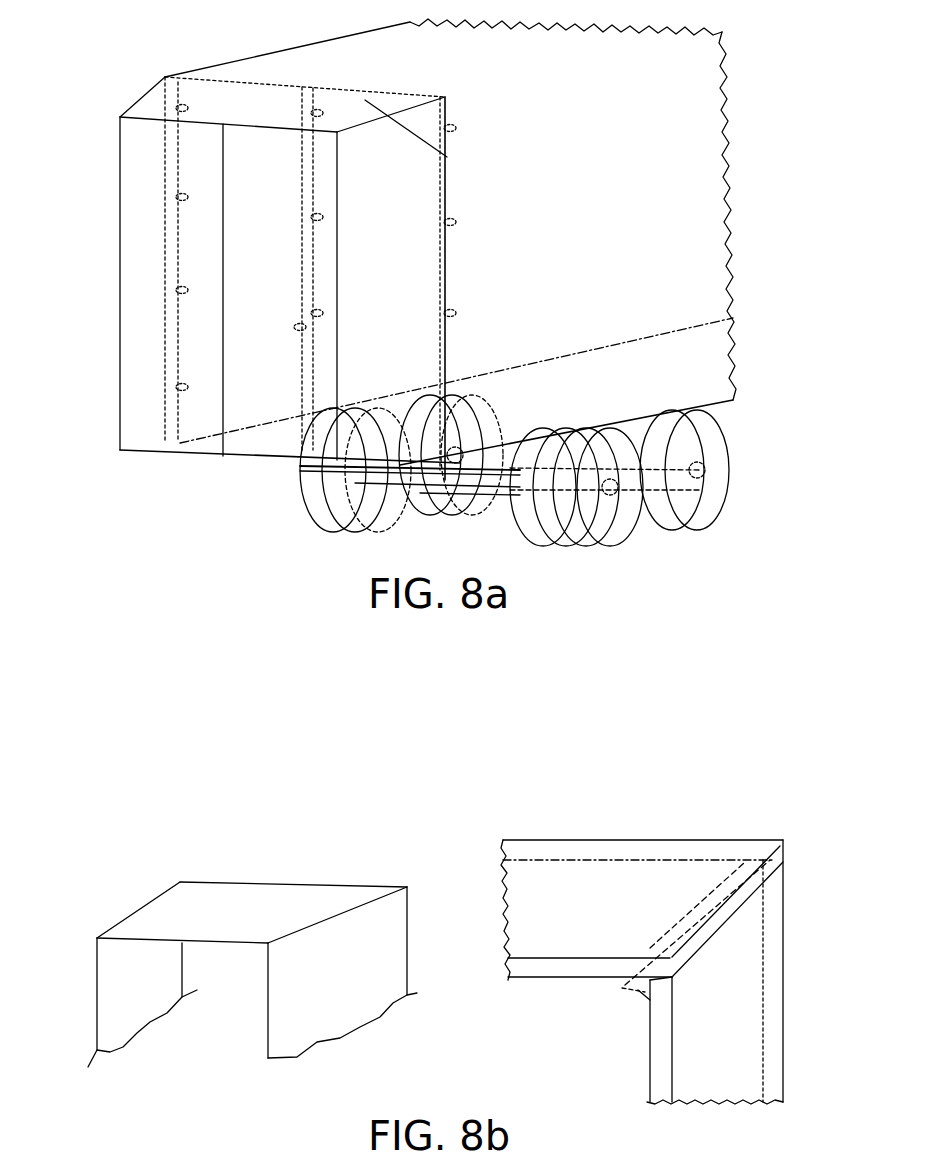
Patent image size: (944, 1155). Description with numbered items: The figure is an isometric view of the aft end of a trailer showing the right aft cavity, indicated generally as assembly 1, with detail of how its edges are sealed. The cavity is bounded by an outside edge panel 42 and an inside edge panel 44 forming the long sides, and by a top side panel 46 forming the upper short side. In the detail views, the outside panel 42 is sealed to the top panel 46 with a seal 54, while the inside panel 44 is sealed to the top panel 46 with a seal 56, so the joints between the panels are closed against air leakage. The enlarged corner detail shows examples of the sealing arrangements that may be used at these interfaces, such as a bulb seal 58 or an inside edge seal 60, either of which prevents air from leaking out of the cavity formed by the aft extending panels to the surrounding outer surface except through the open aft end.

In FIG. 8a, the trailer frame assembly 1 is at (278, 462).
In FIG. 8a, the outside edge panel 42 is at (427, 275).
In FIG. 8b, the outside edge panel 42 is at (342, 1012).
In FIG. 8a, the inside edge panel 44 is at (148, 92).
In FIG. 8b, the inside edge panel 44 is at (130, 1015).
In FIG. 8a, the top side panel 46 is at (367, 105).
In FIG. 8b, the top side panel 46 is at (173, 908).
In FIG. 8a, the seal 54 is at (447, 157).
In FIG. 8b, the seal 54 is at (362, 902).
In FIG. 8b, the seal 56 is at (113, 927).
In FIG. 8b, the bulb seal 58 is at (757, 897).
In FIG. 8b, the inside edge seal 60 is at (638, 990).